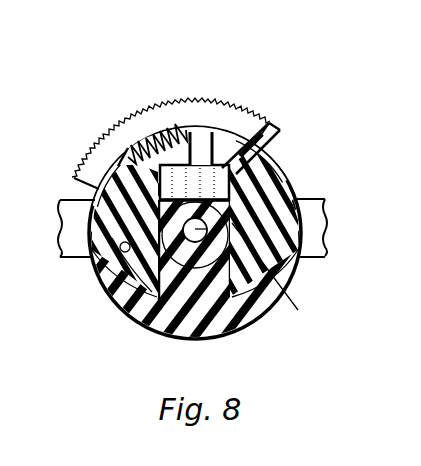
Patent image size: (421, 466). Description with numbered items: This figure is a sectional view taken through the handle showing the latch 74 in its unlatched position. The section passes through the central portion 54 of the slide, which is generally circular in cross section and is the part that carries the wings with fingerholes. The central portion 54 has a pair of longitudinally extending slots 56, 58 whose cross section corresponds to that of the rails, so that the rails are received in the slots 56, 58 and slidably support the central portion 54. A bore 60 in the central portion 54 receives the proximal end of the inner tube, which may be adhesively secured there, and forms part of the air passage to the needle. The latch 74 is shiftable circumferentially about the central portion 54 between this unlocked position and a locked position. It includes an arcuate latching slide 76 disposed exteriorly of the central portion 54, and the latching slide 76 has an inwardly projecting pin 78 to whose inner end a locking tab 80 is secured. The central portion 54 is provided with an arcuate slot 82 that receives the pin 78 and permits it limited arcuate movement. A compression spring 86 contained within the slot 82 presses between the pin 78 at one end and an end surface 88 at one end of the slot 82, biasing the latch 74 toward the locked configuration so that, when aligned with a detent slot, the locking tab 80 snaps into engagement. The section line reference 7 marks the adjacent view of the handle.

The housing section 7 is at (60, 197).
The central portion 54 is at (195, 338).
The longitudinally extending slot 56 is at (123, 252).
The longitudinally extending slot 58 is at (262, 278).
The bore 60 is at (206, 226).
The latch 74 is at (215, 73).
The arcuate latching slide 76 is at (160, 135).
The pin 78 is at (191, 132).
The locking tab 80 is at (272, 124).
The arcuate slot 82 is at (226, 134).
The compression spring 86 is at (133, 147).
The end surface 88 is at (133, 150).